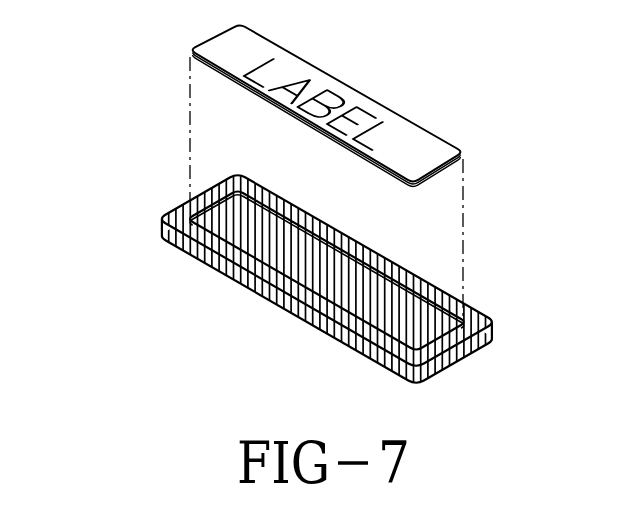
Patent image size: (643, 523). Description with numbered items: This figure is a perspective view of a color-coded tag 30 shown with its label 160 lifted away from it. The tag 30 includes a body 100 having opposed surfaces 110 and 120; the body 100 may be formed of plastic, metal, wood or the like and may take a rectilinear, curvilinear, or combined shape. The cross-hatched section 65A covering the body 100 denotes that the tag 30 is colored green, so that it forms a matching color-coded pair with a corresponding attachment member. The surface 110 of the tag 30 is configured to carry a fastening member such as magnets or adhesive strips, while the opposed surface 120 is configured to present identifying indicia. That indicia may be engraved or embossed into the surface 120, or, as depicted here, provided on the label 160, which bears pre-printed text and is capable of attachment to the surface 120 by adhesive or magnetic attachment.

The tag 30 is at (330, 219).
The cross-hatched section 65A is at (205, 196).
The body 100 is at (330, 275).
The surface 110 is at (458, 362).
The opposed surface 120 is at (416, 276).
The label 160 is at (415, 145).